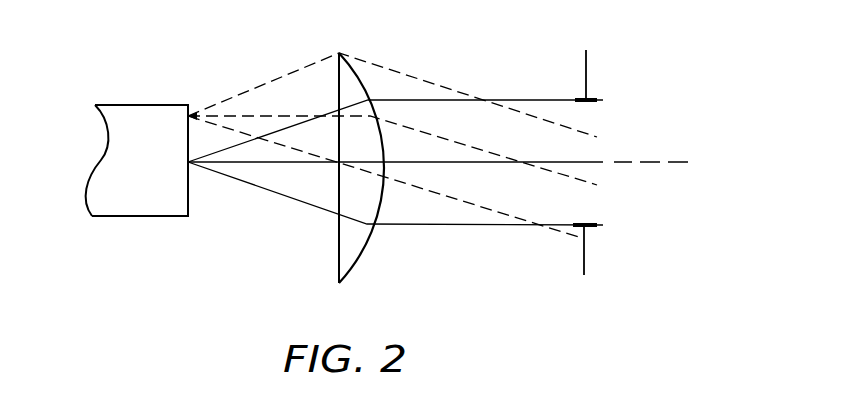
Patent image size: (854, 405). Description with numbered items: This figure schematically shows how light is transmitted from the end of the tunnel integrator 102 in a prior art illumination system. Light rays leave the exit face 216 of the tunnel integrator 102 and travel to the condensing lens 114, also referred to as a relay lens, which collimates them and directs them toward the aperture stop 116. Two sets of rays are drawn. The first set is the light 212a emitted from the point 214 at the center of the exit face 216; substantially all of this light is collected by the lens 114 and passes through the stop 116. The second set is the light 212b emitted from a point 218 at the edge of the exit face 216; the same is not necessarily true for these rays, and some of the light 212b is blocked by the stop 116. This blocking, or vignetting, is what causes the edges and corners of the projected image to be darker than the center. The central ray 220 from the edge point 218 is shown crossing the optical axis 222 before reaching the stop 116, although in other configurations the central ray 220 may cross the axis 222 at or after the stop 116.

The tunnel integrator 102 is at (112, 216).
The condensing lens 114 is at (337, 270).
The aperture stop 116 is at (587, 64).
The light from center point 212a is at (274, 193).
The light from edge point 212b is at (255, 88).
The center point 214 is at (186, 163).
The exit face 216 is at (190, 203).
The edge point 218 is at (186, 114).
The central ray 220 is at (597, 185).
The optical axis 222 is at (652, 162).